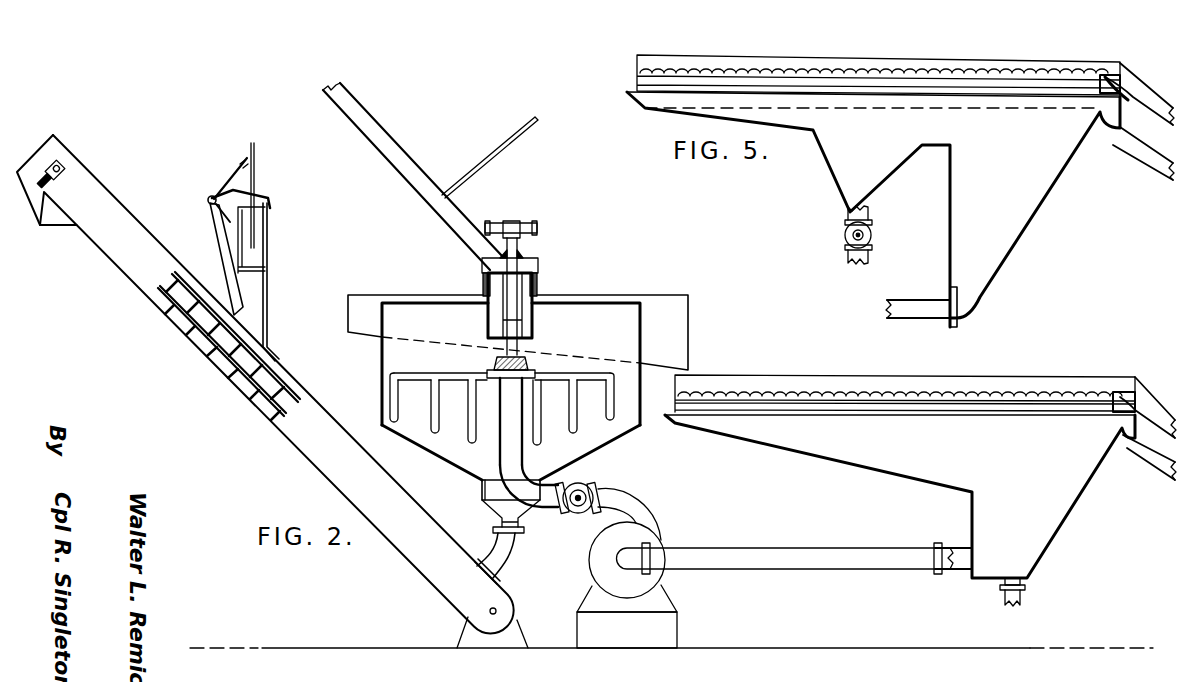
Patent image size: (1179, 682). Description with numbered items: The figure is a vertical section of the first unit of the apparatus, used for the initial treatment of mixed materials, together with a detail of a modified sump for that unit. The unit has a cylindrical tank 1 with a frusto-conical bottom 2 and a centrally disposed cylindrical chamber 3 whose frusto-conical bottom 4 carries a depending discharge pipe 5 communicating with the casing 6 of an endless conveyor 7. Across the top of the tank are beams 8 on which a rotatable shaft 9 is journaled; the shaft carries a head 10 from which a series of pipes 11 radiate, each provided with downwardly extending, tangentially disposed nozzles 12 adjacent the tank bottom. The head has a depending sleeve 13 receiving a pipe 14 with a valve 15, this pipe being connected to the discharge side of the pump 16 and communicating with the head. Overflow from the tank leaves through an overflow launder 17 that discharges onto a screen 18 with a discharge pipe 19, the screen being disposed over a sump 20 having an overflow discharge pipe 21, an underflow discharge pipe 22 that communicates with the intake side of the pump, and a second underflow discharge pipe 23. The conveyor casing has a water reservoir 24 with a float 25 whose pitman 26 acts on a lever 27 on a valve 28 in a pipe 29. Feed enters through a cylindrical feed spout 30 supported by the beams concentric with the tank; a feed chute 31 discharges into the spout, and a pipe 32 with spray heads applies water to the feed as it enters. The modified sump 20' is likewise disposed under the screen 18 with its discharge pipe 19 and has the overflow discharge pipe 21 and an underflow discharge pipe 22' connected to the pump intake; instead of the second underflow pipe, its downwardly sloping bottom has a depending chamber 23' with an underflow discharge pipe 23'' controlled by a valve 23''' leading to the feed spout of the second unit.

In FIG. 2, the cylindrical tank 1 is at (382, 363).
In FIG. 2, the frusto-conical bottom 2 is at (418, 445).
In FIG. 2, the cylindrical chamber 3 is at (482, 487).
In FIG. 2, the frusto-conical bottom 4 is at (490, 508).
In FIG. 2, the discharge pipe 5 is at (507, 557).
In FIG. 2, the casing 6 is at (125, 275).
In FIG. 2, the endless conveyor 7 is at (245, 392).
In FIG. 2, the beams 8 is at (483, 281).
In FIG. 2, the rotatable shaft 9 is at (522, 320).
In FIG. 2, the head 10 is at (497, 364).
In FIG. 2, the pipes 11 is at (408, 372).
In FIG. 2, the nozzles 12 is at (468, 434).
In FIG. 2, the depending sleeve 13 is at (500, 410).
In FIG. 2, the pipe 14 is at (503, 477).
In FIG. 2, the valve 15 is at (577, 514).
In FIG. 2, the pump 16 is at (660, 535).
In FIG. 2, the overflow launder 17 is at (680, 323).
In FIG. 2, the screen 18 is at (795, 393).
In FIG. 5, the screen 18 is at (968, 68).
In FIG. 2, the discharge pipe 19 is at (1152, 408).
In FIG. 5, the discharge pipe 19 is at (1146, 95).
In FIG. 2, the sump 20 is at (900, 496).
In FIG. 5, the modified sump 20' is at (873, 209).
In FIG. 2, the overflow discharge pipe 21 is at (1152, 468).
In FIG. 5, the overflow discharge pipe 21 is at (1137, 160).
In FIG. 2, the underflow discharge pipe 22 is at (953, 570).
In FIG. 5, the underflow discharge pipe 22' is at (900, 307).
In FIG. 2, the second underflow discharge pipe 23 is at (1014, 606).
In FIG. 5, the depending chamber 23' is at (836, 204).
In FIG. 5, the underflow discharge pipe 23'' is at (844, 260).
In FIG. 5, the valve 23''' is at (885, 235).
In FIG. 2, the water reservoir 24 is at (255, 288).
In FIG. 2, the float 25 is at (258, 253).
In FIG. 2, the pitman 26 is at (253, 185).
In FIG. 2, the lever 27 is at (262, 197).
In FIG. 2, the valve 28 is at (208, 199).
In FIG. 2, the pipe 29 is at (233, 178).
In FIG. 2, the cylindrical feed spout 30 is at (488, 314).
In FIG. 2, the feed chute 31 is at (325, 85).
In FIG. 2, the pipe 32 is at (533, 111).